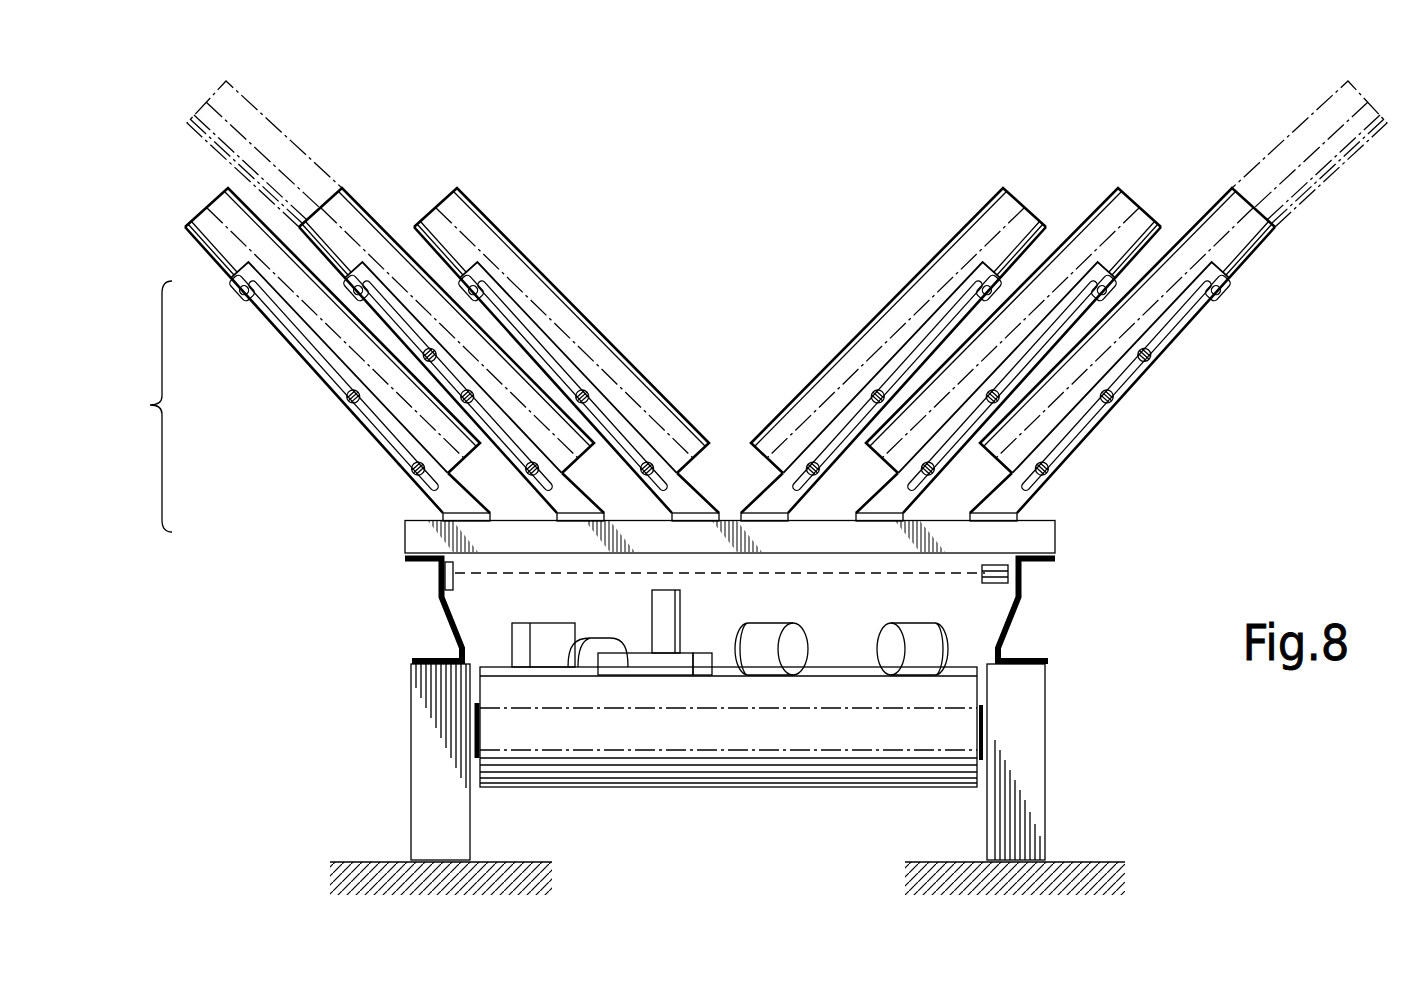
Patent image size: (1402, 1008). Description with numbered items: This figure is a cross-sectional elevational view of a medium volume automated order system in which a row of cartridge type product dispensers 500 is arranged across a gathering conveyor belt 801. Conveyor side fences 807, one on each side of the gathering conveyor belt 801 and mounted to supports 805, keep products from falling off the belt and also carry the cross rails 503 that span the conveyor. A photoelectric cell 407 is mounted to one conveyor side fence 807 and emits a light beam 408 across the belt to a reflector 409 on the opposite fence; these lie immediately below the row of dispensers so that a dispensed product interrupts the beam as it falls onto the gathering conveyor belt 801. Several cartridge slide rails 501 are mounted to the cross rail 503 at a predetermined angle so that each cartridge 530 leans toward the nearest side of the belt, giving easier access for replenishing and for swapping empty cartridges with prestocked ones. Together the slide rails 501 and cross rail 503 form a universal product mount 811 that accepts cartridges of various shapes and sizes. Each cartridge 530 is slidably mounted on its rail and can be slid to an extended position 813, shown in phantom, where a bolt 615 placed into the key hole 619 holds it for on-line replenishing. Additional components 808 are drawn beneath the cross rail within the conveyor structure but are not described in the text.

The extended module position (phantom) 813 is at (250, 100).
The cartridge type product dispenser 500 is at (397, 200).
The cartridge 530 is at (222, 238).
The key hole 619 is at (240, 296).
The bolt 615 is at (460, 396).
The universal product mount 811 is at (138, 406).
The cartridge slide rail 501 is at (376, 430).
The cross rail 503 is at (1046, 541).
The reflector 409 is at (455, 582).
The electronic component 808 is at (662, 626).
The light beam 408 is at (884, 576).
The photoelectric cell 407 is at (1000, 584).
The conveyor side fence 807 is at (440, 632).
The support 805 is at (411, 750).
The gathering conveyor belt 801 is at (630, 765).